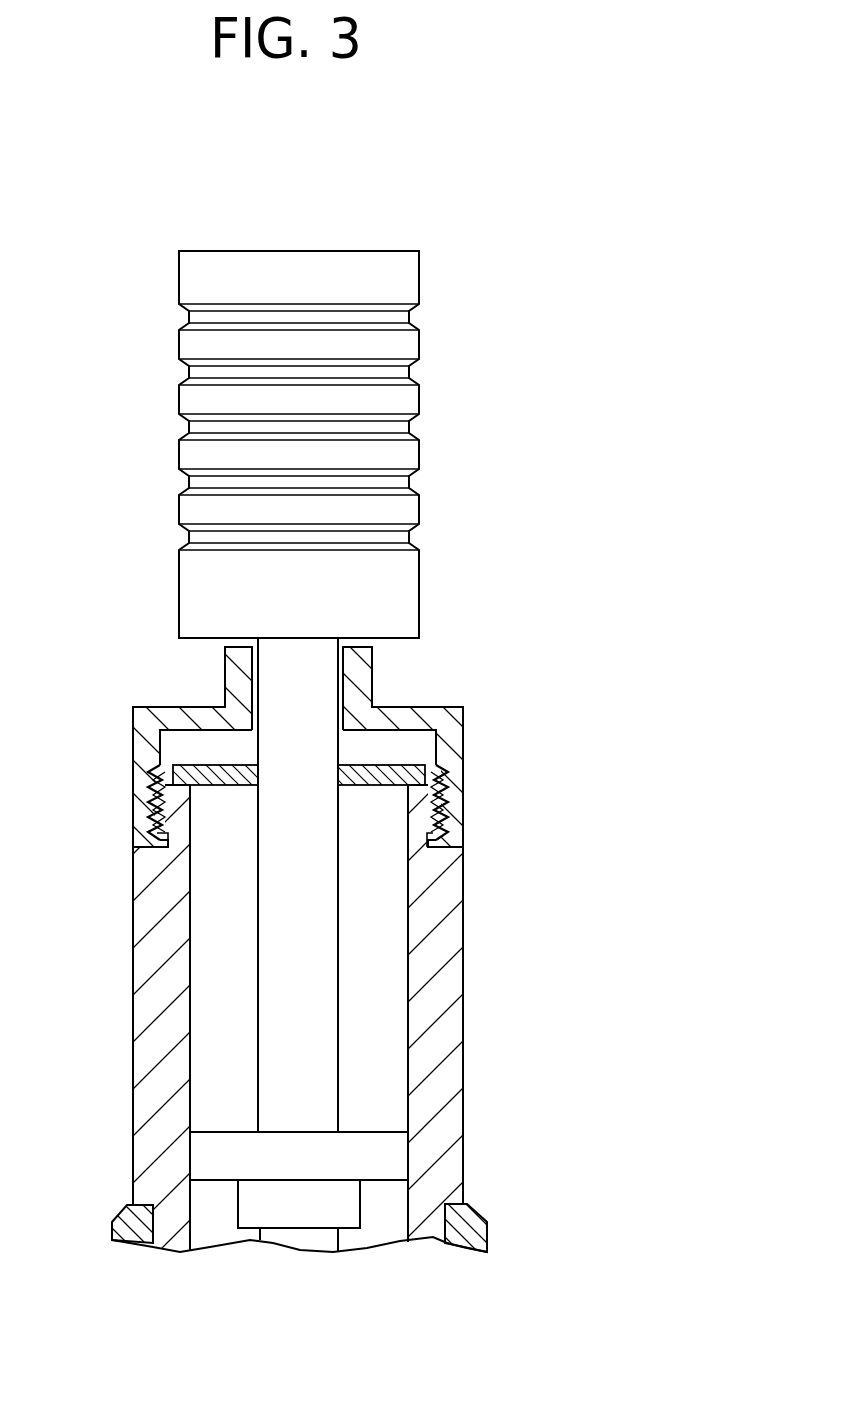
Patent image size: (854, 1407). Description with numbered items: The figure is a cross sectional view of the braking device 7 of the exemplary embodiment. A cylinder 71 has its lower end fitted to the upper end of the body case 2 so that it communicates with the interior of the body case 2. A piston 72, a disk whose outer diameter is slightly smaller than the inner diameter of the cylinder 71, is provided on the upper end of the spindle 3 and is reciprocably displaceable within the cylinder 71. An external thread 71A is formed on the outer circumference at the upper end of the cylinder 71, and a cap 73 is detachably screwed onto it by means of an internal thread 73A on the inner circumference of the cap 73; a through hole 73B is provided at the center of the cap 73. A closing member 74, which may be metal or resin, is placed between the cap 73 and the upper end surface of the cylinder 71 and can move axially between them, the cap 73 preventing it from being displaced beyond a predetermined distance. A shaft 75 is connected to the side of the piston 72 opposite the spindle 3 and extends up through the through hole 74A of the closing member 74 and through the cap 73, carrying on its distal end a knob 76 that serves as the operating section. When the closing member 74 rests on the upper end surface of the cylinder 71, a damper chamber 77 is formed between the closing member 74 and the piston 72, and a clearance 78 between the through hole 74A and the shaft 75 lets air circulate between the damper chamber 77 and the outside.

The braking device 7 is at (84, 562).
The knob 76 is at (400, 275).
The cap 73 is at (447, 710).
The through hole 73B is at (252, 672).
The internal thread 73A is at (148, 810).
The closing member 74 is at (402, 770).
The through hole 74A is at (253, 755).
The clearance 78 is at (338, 790).
The shaft 75 is at (315, 908).
The cylinder 71 is at (464, 1018).
The external thread 71A is at (182, 815).
The damper chamber 77 is at (203, 1025).
The piston 72 is at (390, 1158).
The spindle 3 is at (315, 1242).
The body case 2 is at (112, 1232).